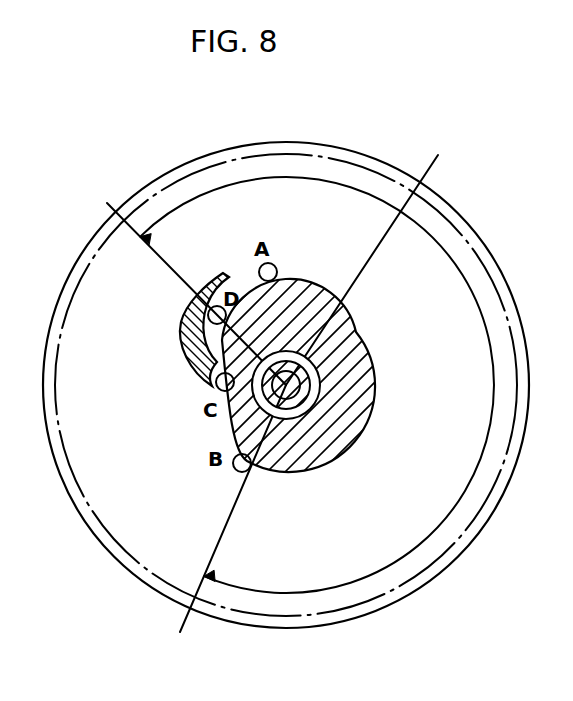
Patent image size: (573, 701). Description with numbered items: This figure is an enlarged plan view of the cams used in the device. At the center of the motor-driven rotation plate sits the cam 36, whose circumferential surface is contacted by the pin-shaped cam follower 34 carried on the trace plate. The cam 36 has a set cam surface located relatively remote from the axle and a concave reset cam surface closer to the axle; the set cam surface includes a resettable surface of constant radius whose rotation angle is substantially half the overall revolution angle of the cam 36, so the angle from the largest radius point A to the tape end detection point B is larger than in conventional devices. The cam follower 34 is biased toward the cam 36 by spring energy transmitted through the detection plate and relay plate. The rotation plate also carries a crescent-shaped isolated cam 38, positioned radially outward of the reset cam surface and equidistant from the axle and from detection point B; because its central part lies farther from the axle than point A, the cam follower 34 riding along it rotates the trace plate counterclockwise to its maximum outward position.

The cam follower 34 is at (276, 267).
The cam 36 is at (330, 458).
The isolated cam 38 is at (181, 340).